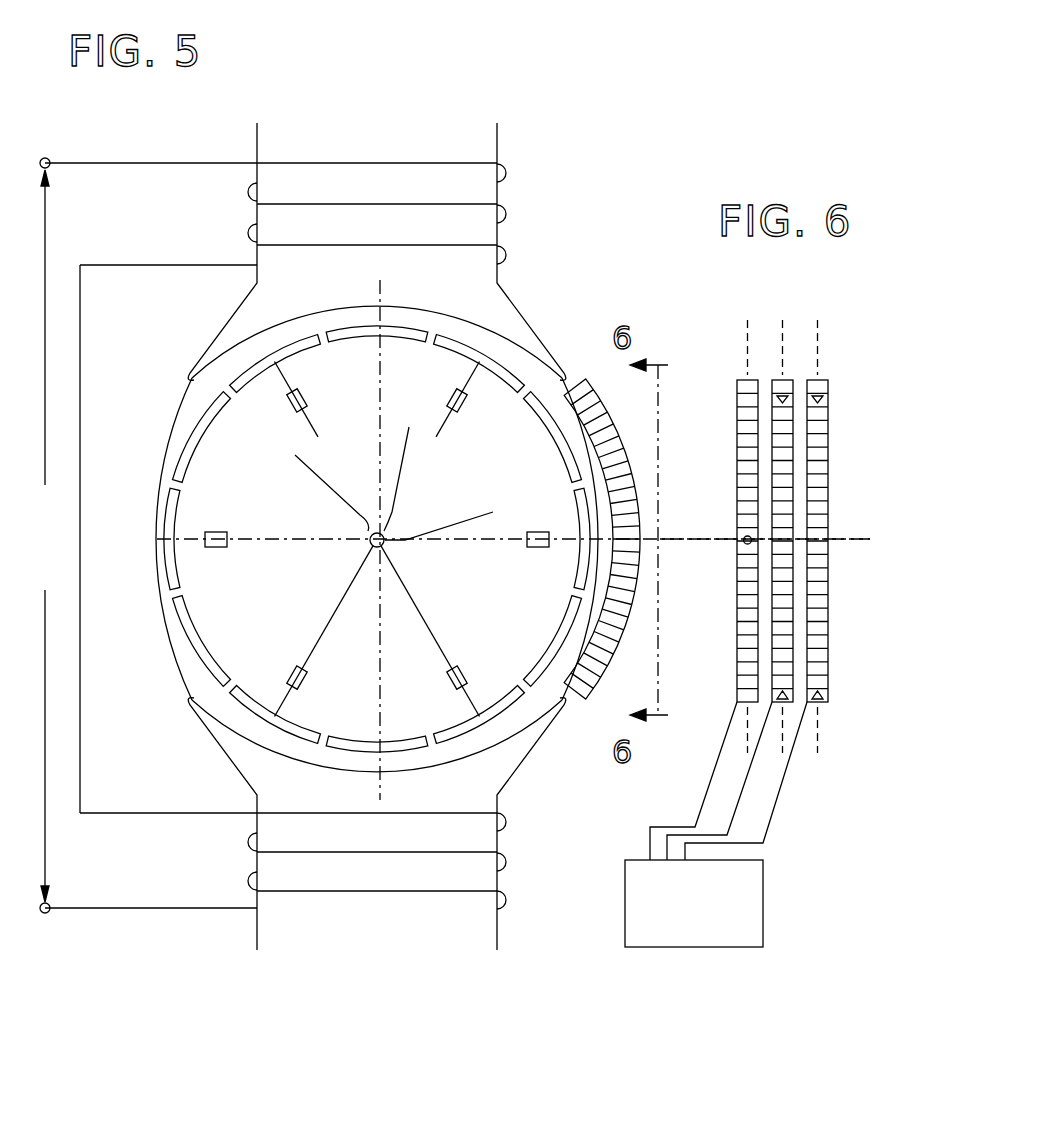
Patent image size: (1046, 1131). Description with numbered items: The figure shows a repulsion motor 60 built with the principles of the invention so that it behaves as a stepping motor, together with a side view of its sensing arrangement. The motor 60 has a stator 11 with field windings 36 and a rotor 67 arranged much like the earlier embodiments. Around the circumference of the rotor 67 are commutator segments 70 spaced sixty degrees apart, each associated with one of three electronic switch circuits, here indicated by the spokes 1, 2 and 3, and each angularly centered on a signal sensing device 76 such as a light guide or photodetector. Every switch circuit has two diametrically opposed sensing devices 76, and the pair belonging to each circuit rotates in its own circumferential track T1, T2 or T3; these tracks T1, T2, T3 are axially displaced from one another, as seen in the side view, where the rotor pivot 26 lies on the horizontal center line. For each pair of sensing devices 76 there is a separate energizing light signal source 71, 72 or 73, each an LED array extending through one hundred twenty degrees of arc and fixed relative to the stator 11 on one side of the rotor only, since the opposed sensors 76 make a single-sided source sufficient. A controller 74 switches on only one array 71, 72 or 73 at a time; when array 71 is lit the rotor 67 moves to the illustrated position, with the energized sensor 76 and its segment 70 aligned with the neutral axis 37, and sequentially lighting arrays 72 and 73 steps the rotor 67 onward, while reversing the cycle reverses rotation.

In FIG. 5, the stator 11 is at (500, 148).
In FIG. 5, the repulsion motor 60 is at (555, 238).
In FIG. 5, the field winding coil 36 is at (381, 283).
In FIG. 5, the rotor 67 is at (513, 371).
In FIG. 5, the commutator segments 70 is at (243, 367).
In FIG. 5, the signal sensing devices 76 is at (450, 393).
In FIG. 6, the signal sensing devices 76 is at (820, 397).
In FIG. 5, the phase three spoke 3 is at (311, 404).
In FIG. 5, the phase two spoke 2 is at (454, 419).
In FIG. 5, the phase one hand 1 is at (441, 543).
In FIG. 5, the energizing light signal source 71 is at (586, 601).
In FIG. 6, the energizing light signal source 71 is at (745, 378).
In FIG. 5, the energizing light signal source 72 is at (586, 601).
In FIG. 6, the energizing light signal source 72 is at (785, 378).
In FIG. 5, the energizing light signal source 73 is at (586, 705).
In FIG. 6, the energizing light signal source 73 is at (818, 378).
In FIG. 5, the neutral axis 37 is at (673, 539).
In FIG. 6, the pivot point 26 is at (742, 548).
In FIG. 6, the track T1 is at (750, 743).
In FIG. 6, the track T2 is at (783, 745).
In FIG. 6, the track T3 is at (818, 750).
In FIG. 6, the controller 74 is at (690, 947).